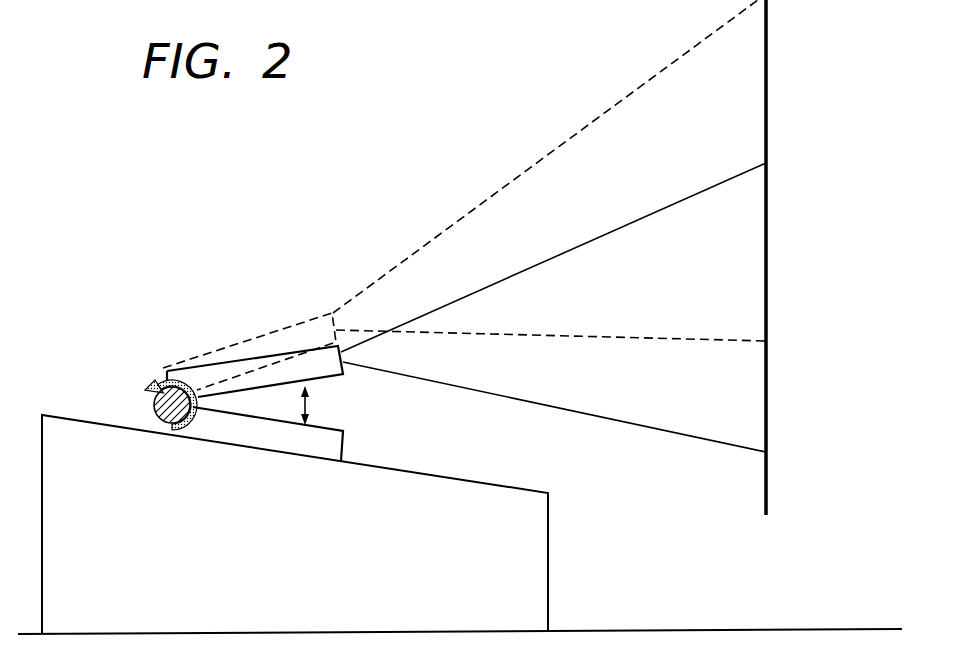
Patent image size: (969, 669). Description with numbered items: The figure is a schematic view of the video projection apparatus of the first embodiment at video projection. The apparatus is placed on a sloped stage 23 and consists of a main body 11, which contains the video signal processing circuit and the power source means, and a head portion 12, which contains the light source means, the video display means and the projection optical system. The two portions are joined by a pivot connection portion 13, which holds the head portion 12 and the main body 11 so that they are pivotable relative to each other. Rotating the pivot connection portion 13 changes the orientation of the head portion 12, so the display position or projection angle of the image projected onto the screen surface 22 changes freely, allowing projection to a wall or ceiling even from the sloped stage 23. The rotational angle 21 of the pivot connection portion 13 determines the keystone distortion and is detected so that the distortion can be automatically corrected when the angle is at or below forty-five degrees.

The main body 11 is at (268, 433).
The head portion 12 is at (273, 378).
The pivot connection portion 13 is at (143, 408).
The rotational angle 21 is at (308, 400).
The screen surface 22 is at (766, 416).
The sloped stage 23 is at (517, 578).